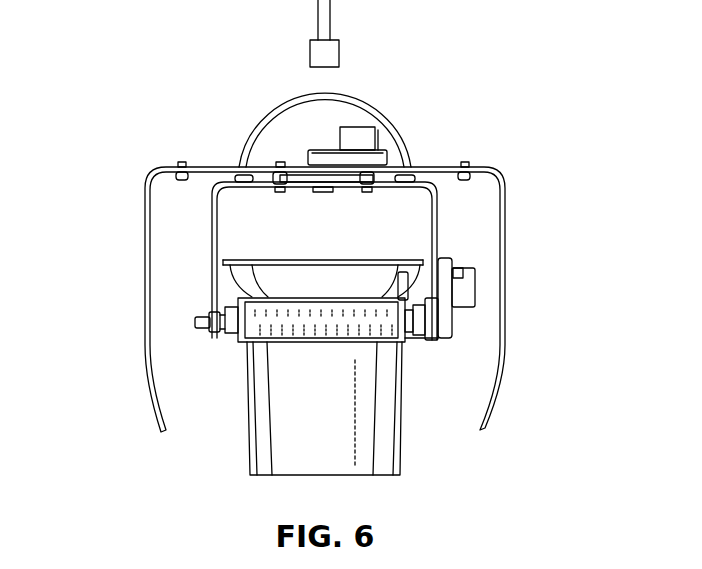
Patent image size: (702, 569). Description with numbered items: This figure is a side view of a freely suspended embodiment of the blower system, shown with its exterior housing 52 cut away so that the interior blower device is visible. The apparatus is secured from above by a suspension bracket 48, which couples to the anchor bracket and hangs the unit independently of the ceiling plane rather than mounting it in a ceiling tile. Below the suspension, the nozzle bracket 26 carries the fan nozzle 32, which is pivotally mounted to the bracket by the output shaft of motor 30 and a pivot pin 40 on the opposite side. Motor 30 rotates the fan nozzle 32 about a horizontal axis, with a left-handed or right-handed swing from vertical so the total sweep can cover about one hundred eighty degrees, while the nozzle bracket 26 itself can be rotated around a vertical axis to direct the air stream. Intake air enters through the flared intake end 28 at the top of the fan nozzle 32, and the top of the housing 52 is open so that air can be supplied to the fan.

The nozzle bracket 26 is at (212, 262).
The flared intake end 28 is at (318, 243).
The motor 30 is at (457, 267).
The fan nozzle 32 is at (247, 432).
The pivot pin 40 is at (207, 327).
The suspension bracket 48 is at (247, 118).
The exterior housing 52 is at (143, 305).